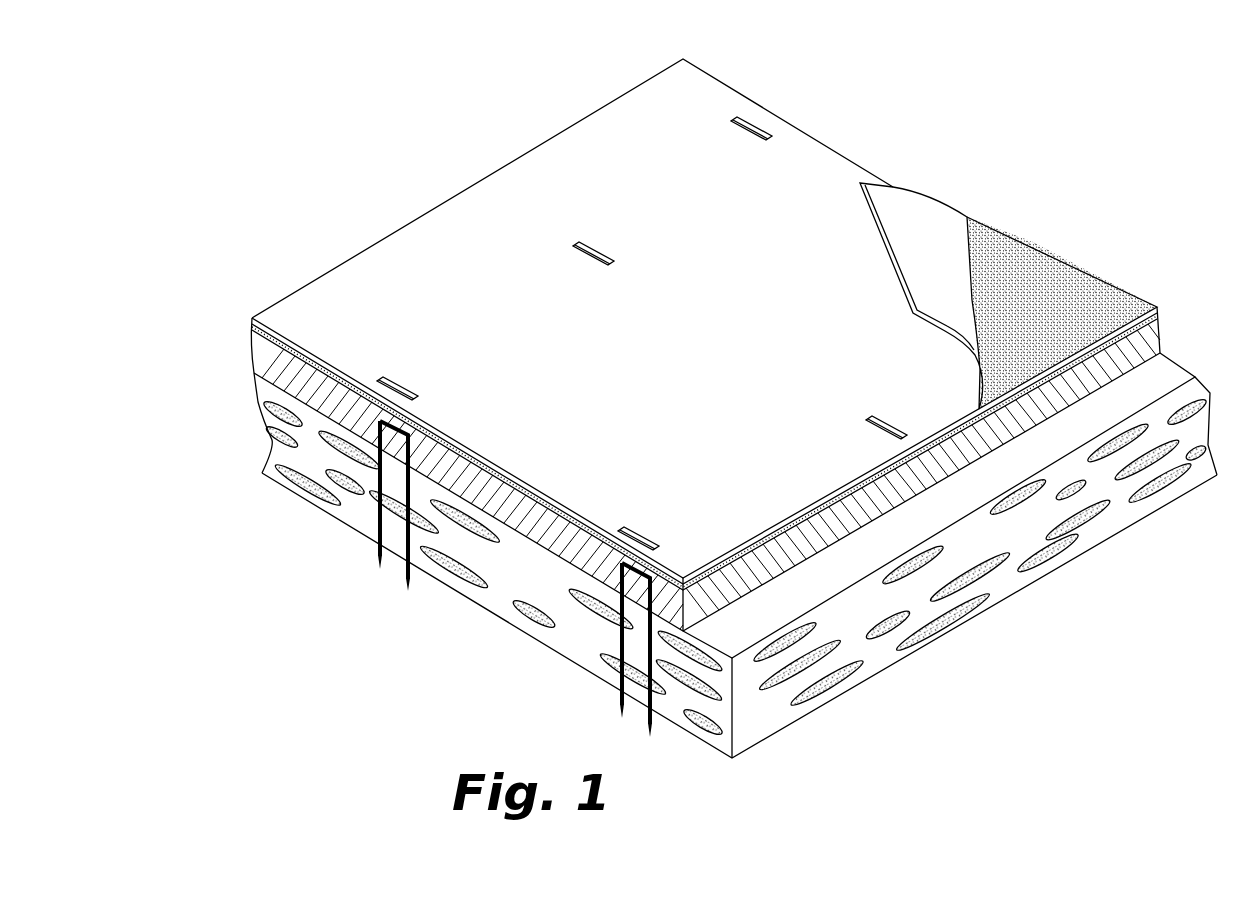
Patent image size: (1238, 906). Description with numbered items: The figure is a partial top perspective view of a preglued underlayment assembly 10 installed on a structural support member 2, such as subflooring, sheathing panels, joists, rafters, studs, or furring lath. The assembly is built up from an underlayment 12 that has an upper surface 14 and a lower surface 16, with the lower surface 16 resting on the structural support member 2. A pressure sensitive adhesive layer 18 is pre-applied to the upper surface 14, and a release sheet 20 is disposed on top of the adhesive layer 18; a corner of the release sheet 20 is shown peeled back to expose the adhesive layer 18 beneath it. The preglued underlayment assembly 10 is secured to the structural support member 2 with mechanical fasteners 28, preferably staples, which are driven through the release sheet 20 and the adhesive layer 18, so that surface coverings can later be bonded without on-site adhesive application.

The preglued underlayment assembly 10 is at (486, 135).
The release sheet 20 is at (821, 175).
The pressure sensitive adhesive layer 18 is at (1037, 263).
The upper surface 14 is at (253, 328).
The underlayment 12 is at (263, 362).
The lower surface 16 is at (280, 392).
The structural support member 2 is at (675, 713).
The mechanical fasteners 28 is at (377, 563).